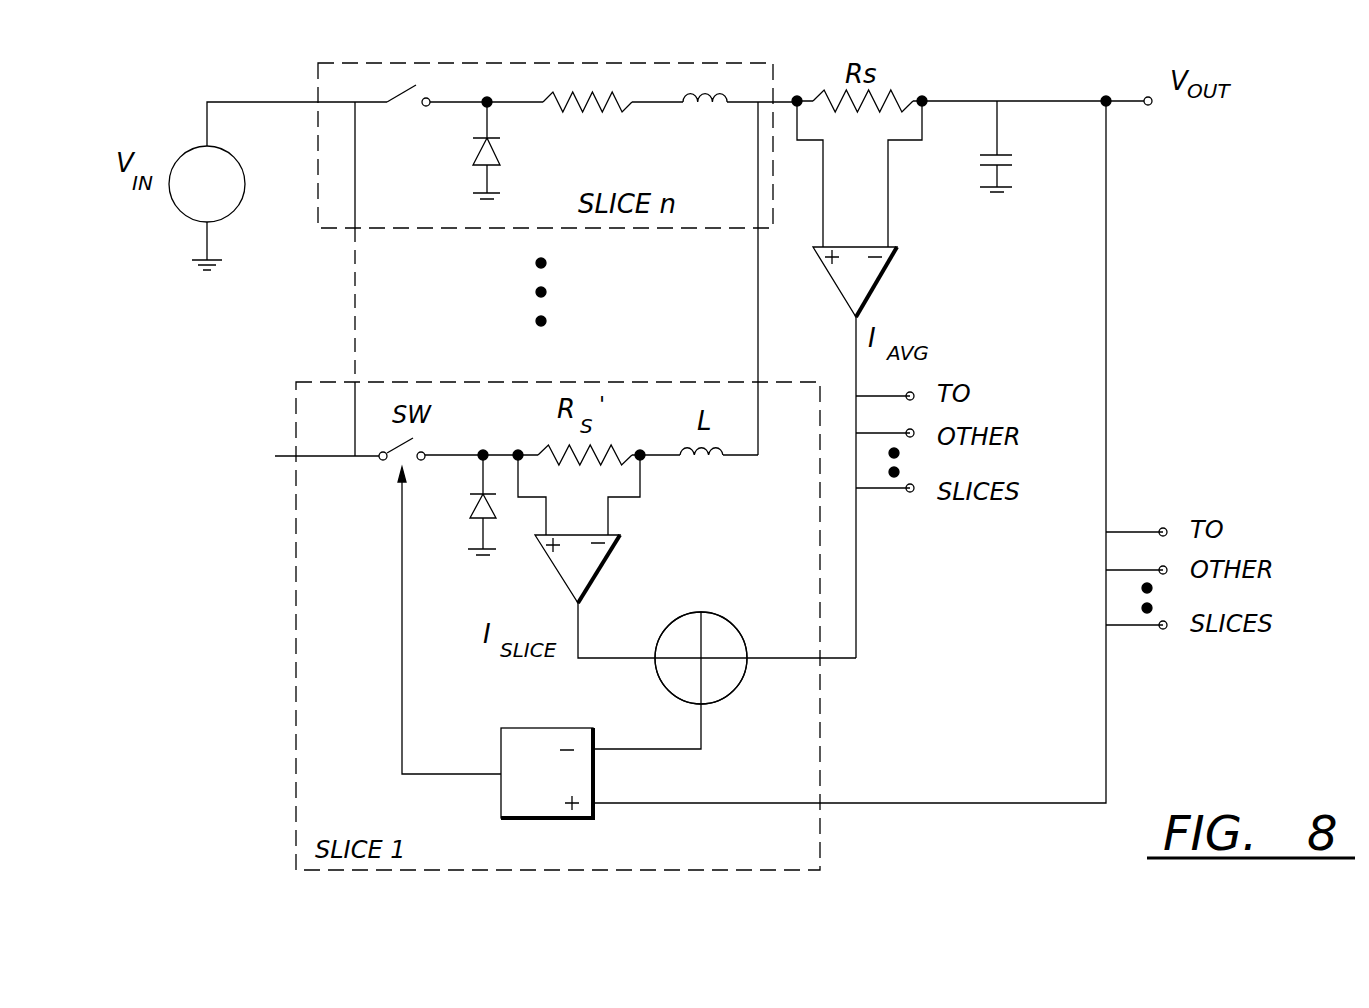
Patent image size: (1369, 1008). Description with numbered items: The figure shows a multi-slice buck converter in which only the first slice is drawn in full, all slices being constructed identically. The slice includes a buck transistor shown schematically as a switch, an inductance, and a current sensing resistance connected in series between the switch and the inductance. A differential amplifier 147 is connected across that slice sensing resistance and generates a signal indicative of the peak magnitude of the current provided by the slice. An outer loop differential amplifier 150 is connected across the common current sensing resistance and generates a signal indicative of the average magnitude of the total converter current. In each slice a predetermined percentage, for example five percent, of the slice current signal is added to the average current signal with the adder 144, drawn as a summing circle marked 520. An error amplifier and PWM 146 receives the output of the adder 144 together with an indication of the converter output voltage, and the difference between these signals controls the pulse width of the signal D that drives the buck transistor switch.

The outer loop differential amplifier 150 is at (893, 248).
The differential amplifier 147 is at (612, 557).
The adder 144 is at (730, 695).
The summing node 520 is at (670, 680).
The error amplifier and PWM 146 is at (560, 818).